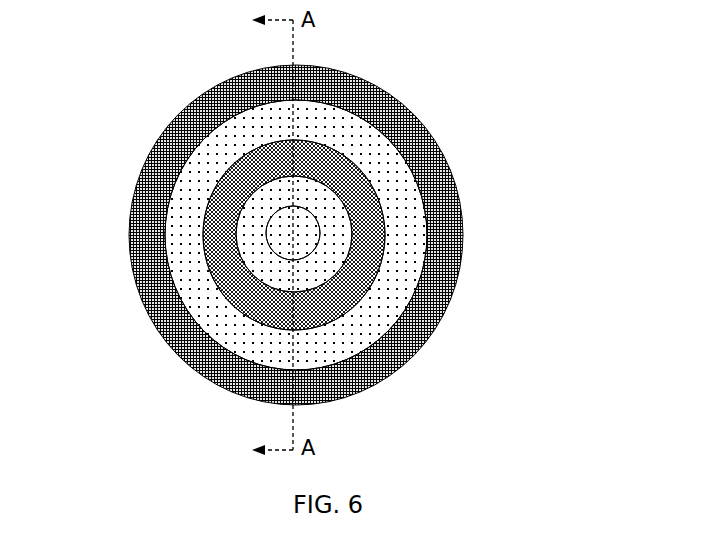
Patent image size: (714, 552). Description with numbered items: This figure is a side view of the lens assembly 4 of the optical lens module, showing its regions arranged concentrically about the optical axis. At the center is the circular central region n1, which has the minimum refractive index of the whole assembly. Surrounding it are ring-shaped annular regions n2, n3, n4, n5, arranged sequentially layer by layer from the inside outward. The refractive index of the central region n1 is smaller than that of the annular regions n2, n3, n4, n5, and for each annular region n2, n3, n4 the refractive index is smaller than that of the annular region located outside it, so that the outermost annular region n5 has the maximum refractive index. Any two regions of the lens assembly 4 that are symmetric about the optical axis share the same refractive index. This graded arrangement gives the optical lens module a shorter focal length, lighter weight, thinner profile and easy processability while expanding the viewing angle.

The lens assembly 4 is at (163, 133).
The central region n1 is at (302, 220).
The annular region n2 is at (328, 220).
The annular region n3 is at (370, 218).
The annular region n4 is at (402, 217).
The annular region n5 is at (442, 213).